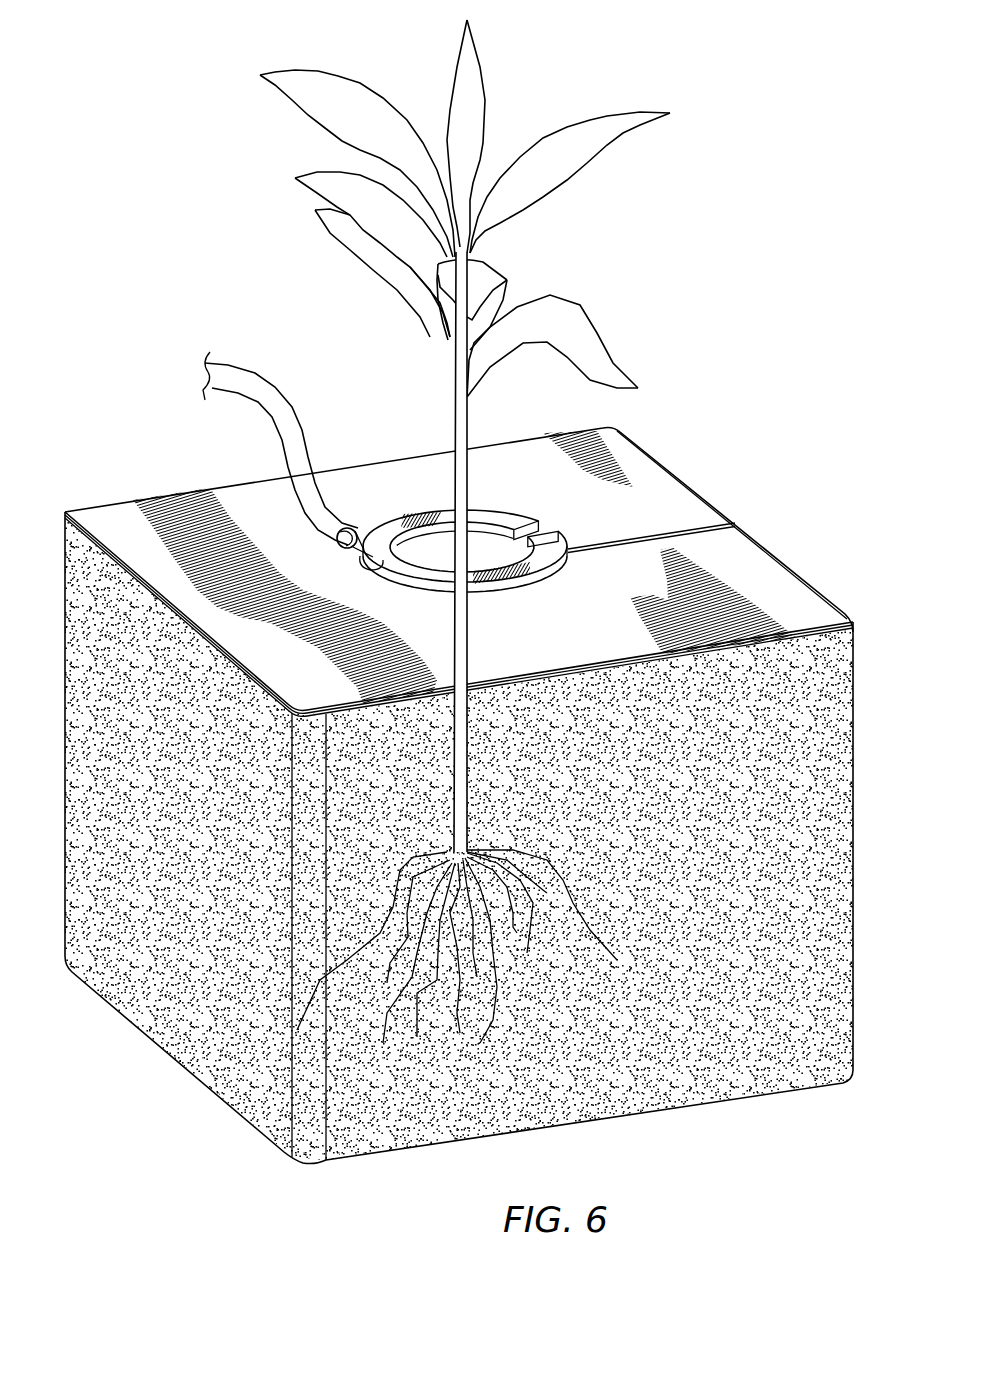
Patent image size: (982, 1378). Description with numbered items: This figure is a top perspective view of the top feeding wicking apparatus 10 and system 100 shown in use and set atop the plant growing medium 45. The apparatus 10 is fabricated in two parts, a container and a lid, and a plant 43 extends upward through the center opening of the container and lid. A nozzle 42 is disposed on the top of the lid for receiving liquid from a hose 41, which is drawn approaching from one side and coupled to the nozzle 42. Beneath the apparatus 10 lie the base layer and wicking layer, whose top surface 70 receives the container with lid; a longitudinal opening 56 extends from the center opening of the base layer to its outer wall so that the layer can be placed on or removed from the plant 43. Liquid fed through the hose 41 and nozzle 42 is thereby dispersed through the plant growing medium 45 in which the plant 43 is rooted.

The system 100 is at (157, 232).
The top feeding wicking apparatus 10 is at (655, 257).
The hose 41 is at (303, 460).
The nozzle 42 is at (370, 553).
The plant 43 is at (457, 427).
The plant growing medium 45 is at (708, 1073).
The longitudinal opening 56 is at (693, 524).
The top surface 70 is at (562, 652).